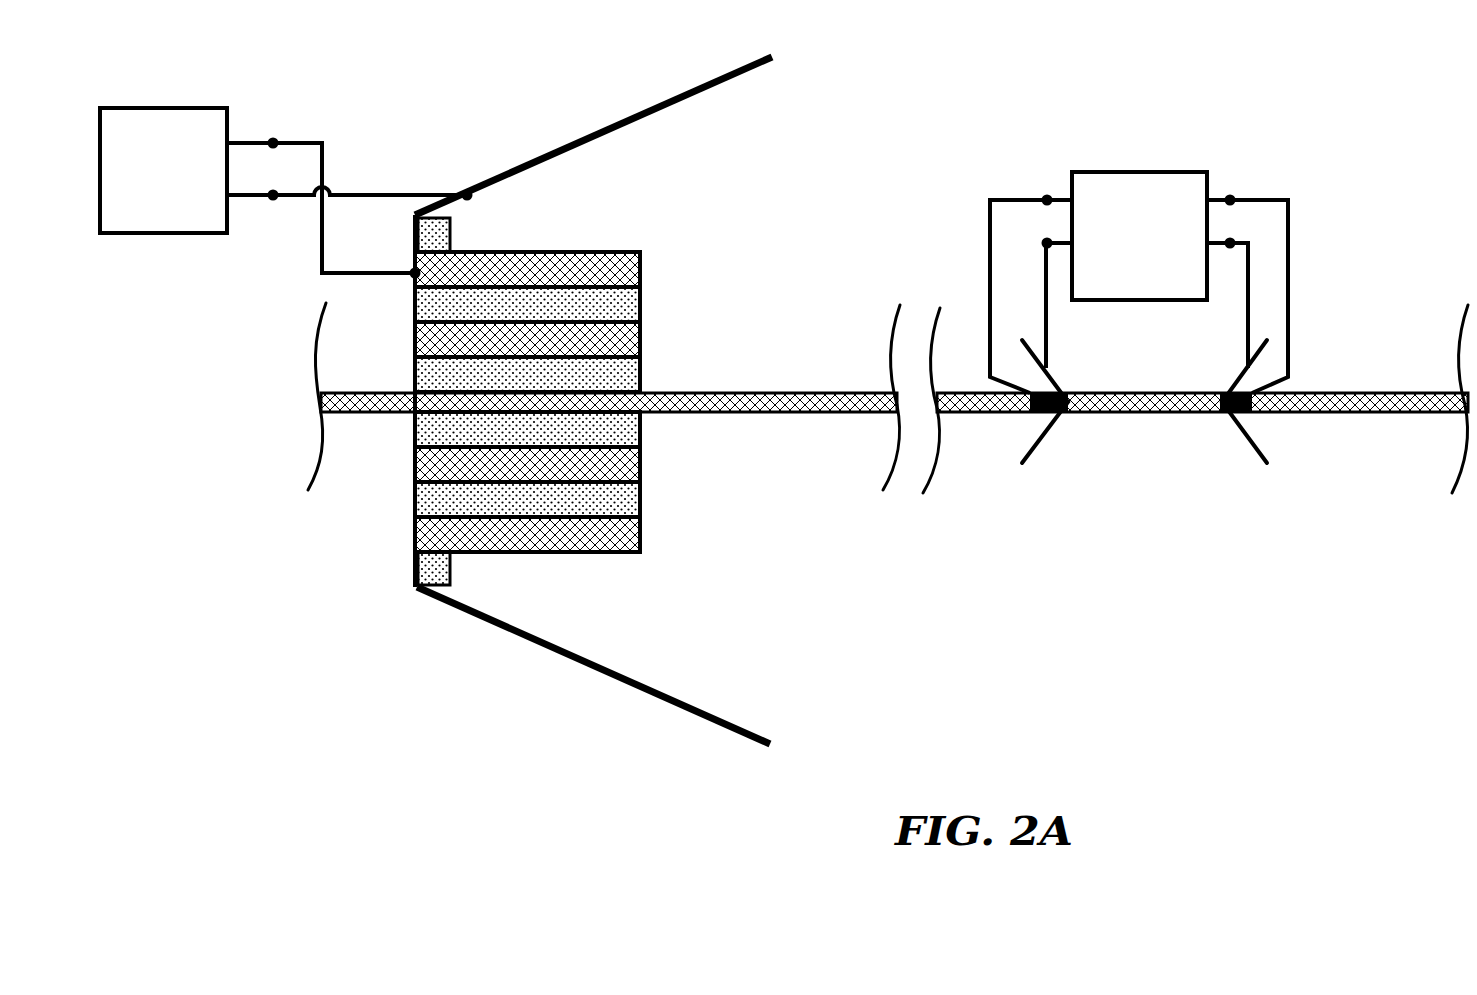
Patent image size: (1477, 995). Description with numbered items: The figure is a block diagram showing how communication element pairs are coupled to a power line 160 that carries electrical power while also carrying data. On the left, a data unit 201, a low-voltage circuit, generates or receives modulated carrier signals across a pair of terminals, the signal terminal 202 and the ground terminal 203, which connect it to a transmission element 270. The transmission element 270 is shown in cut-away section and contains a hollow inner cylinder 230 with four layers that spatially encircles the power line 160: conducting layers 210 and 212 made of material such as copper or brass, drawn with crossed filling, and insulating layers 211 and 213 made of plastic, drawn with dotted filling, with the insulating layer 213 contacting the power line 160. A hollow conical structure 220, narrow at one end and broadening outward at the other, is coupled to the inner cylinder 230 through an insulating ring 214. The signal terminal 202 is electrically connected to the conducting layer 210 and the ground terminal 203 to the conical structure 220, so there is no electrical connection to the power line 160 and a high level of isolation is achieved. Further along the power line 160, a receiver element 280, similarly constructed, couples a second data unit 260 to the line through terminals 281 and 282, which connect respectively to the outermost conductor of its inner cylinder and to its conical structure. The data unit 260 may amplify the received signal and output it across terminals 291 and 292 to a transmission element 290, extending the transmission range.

The power line 160 is at (828, 390).
The data unit 201 is at (163, 170).
The signal terminal 202 is at (273, 139).
The ground terminal 203 is at (271, 202).
The conducting layer 210 is at (640, 270).
The insulating layer 211 is at (640, 305).
The conducting layer 212 is at (640, 340).
The insulating layer 213 is at (640, 375).
The insulating ring 214 is at (450, 230).
The hollow conical structure 220 is at (667, 105).
The hollow inner cylinder 230 is at (557, 372).
The data unit 260 is at (1139, 236).
The transmission element 270 is at (495, 476).
The receiver element 280 is at (1034, 466).
The terminal 281 is at (1009, 196).
The terminal 282 is at (1046, 245).
The transmission element 290 is at (1246, 461).
The terminal 291 is at (1260, 194).
The terminal 292 is at (1247, 307).